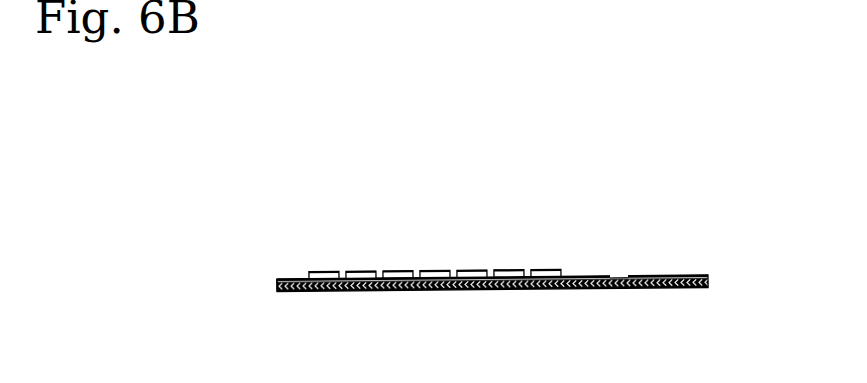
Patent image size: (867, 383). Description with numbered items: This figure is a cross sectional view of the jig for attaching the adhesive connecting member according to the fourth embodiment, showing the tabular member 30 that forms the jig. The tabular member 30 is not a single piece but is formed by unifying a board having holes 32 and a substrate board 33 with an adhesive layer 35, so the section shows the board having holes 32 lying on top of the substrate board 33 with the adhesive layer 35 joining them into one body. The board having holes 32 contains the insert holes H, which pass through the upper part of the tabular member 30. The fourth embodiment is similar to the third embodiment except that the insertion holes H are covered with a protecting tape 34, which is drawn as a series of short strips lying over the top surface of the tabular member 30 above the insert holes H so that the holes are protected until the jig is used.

The tabular member 30 is at (491, 253).
The board having holes 32 is at (303, 278).
The substrate board 33 is at (298, 292).
The protecting tape 34 is at (435, 219).
The adhesive layer 35 is at (277, 280).
The insert hole H is at (621, 275).